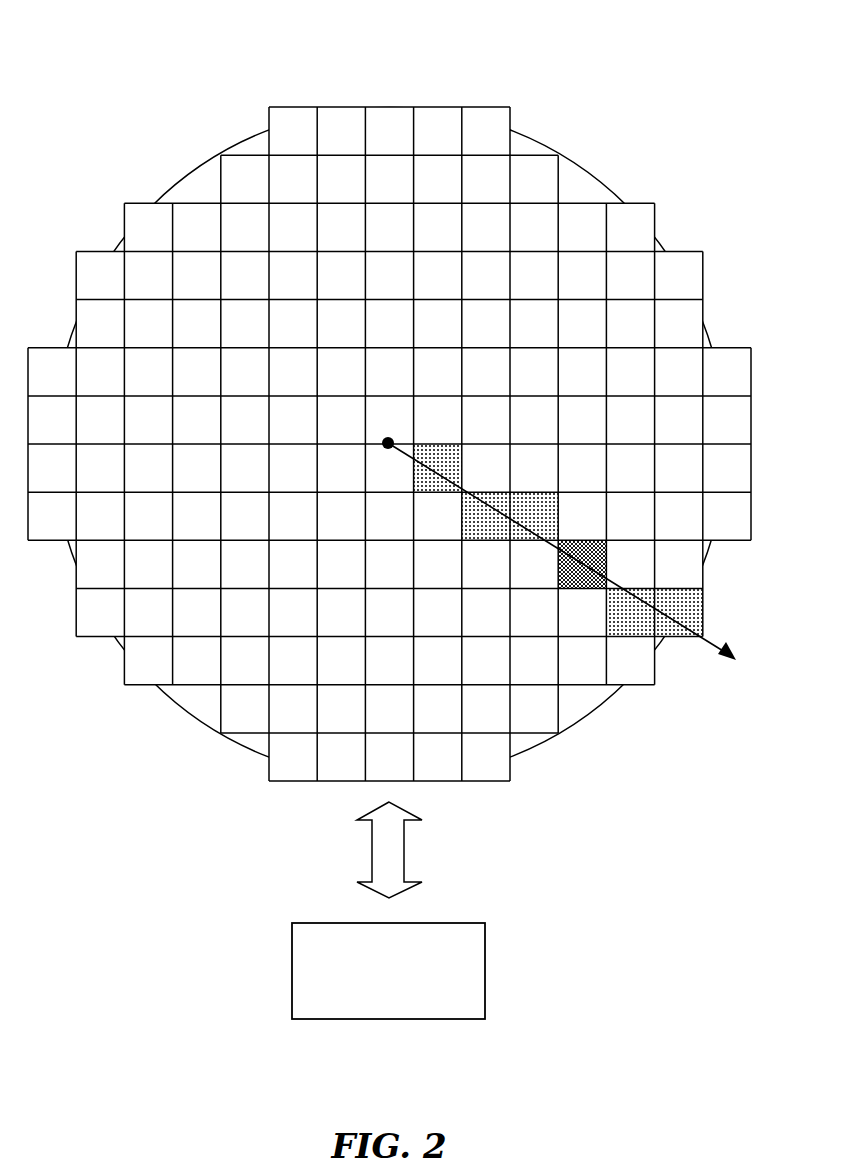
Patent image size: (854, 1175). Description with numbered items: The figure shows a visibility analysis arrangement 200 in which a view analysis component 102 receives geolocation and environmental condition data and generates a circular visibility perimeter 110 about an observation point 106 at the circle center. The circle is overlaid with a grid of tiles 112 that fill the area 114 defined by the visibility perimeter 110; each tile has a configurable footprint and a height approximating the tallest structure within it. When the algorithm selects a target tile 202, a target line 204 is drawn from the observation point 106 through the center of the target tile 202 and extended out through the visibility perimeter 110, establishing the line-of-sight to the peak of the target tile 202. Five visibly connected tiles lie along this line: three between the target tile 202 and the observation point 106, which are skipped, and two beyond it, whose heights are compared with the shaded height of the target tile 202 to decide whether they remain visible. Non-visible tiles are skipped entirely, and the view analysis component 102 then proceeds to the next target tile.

The view analysis system diagram 200 is at (714, 34).
The visibility perimeter 110 is at (578, 162).
The tiles 112 is at (126, 170).
The area 114 is at (203, 350).
The observation point 106 is at (391, 436).
The target tile 202 is at (593, 538).
The target line 204 is at (720, 643).
The view analysis component 102 is at (452, 922).